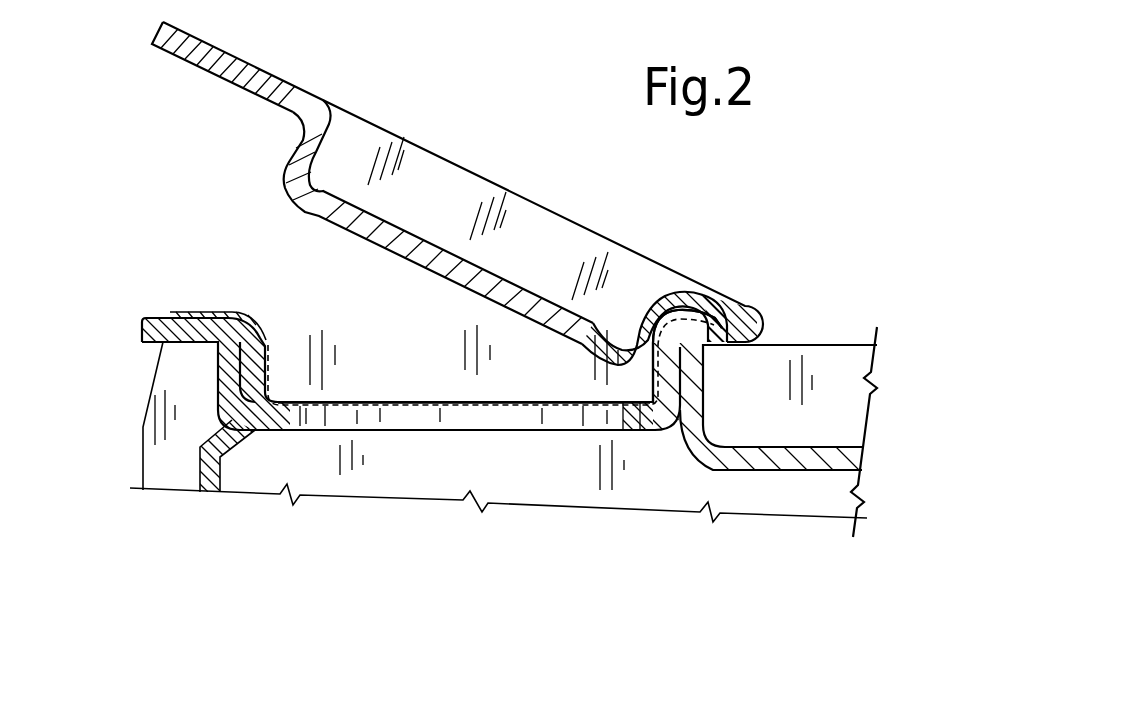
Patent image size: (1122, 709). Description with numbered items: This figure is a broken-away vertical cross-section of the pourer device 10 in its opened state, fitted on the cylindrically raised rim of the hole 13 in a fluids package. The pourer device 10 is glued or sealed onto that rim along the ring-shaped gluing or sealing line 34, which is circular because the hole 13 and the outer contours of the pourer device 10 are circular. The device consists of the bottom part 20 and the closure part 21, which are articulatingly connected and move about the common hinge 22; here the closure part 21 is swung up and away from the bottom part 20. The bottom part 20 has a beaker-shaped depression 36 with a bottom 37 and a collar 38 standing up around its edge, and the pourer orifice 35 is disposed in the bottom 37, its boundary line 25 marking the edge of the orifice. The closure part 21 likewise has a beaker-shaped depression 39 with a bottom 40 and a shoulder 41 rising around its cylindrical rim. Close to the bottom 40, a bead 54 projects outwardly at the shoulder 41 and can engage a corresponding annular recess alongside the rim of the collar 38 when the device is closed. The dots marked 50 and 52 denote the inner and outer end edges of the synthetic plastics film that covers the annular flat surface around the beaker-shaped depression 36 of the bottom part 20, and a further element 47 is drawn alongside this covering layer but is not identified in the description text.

The pourer device 10 is at (148, 190).
The hole 13 is at (230, 397).
The bottom part 20 is at (460, 379).
The closure part 21 is at (381, 113).
The hinge 22 is at (750, 310).
The boundary line of the pourer orifice 25 is at (657, 380).
The gluing or sealing line 34 is at (697, 377).
The pourer orifice 35 is at (403, 413).
The beaker-shaped depression 36 is at (324, 347).
The bottom 37 is at (260, 432).
The collar 38 is at (627, 403).
The beaker-shaped depression 39 is at (629, 291).
The bottom 40 is at (447, 263).
The shoulder 41 is at (312, 157).
The seal 47 is at (187, 313).
The inner end edge of the synthetic plastics film 50 is at (720, 320).
The outer end edge of the synthetic plastics film 52 is at (170, 313).
The bead 54 is at (283, 177).